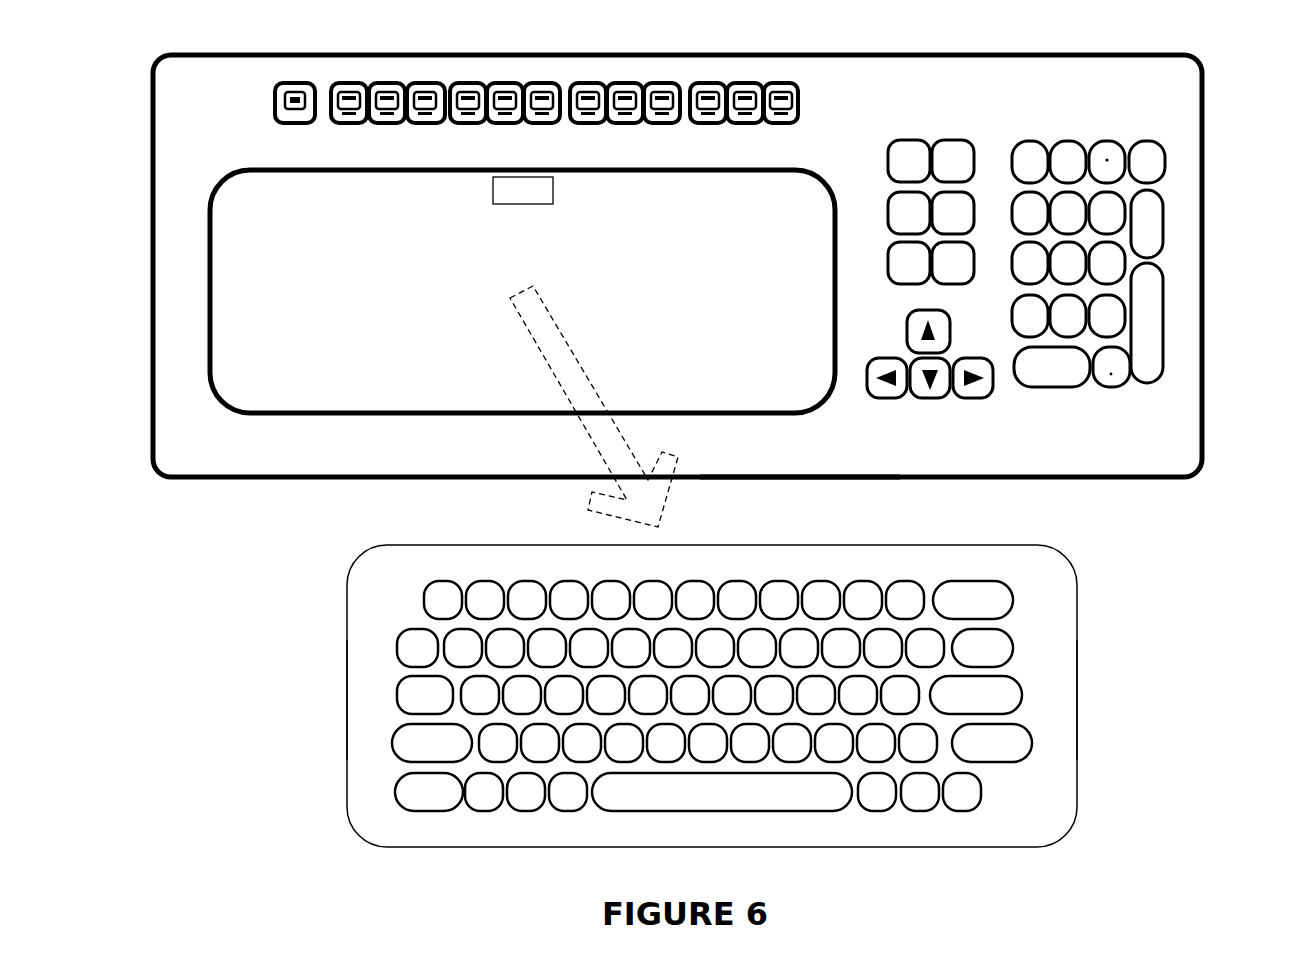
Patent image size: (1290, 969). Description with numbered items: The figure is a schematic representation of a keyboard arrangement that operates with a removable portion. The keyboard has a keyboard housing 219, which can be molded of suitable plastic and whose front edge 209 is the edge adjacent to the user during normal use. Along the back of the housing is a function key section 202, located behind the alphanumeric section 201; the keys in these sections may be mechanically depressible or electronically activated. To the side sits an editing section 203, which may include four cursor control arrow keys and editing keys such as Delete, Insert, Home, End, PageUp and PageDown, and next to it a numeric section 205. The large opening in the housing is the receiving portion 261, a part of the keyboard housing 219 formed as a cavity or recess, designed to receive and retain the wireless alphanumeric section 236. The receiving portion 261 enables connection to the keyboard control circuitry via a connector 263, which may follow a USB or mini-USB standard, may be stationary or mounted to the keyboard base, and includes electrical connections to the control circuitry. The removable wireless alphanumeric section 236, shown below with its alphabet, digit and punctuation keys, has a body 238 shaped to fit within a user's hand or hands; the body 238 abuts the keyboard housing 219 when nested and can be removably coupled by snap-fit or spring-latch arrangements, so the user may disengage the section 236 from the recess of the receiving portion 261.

The alphanumeric section 201 is at (402, 602).
The function key section 202 is at (283, 82).
The editing section 203 is at (931, 140).
The numeric section 205 is at (1130, 160).
The front edge 209 is at (775, 478).
The keyboard housing 219 is at (210, 460).
The wireless alphanumeric section 236 is at (347, 693).
The body 238 is at (1075, 697).
The receiving portion 261 is at (208, 290).
The connector 263 is at (523, 190).